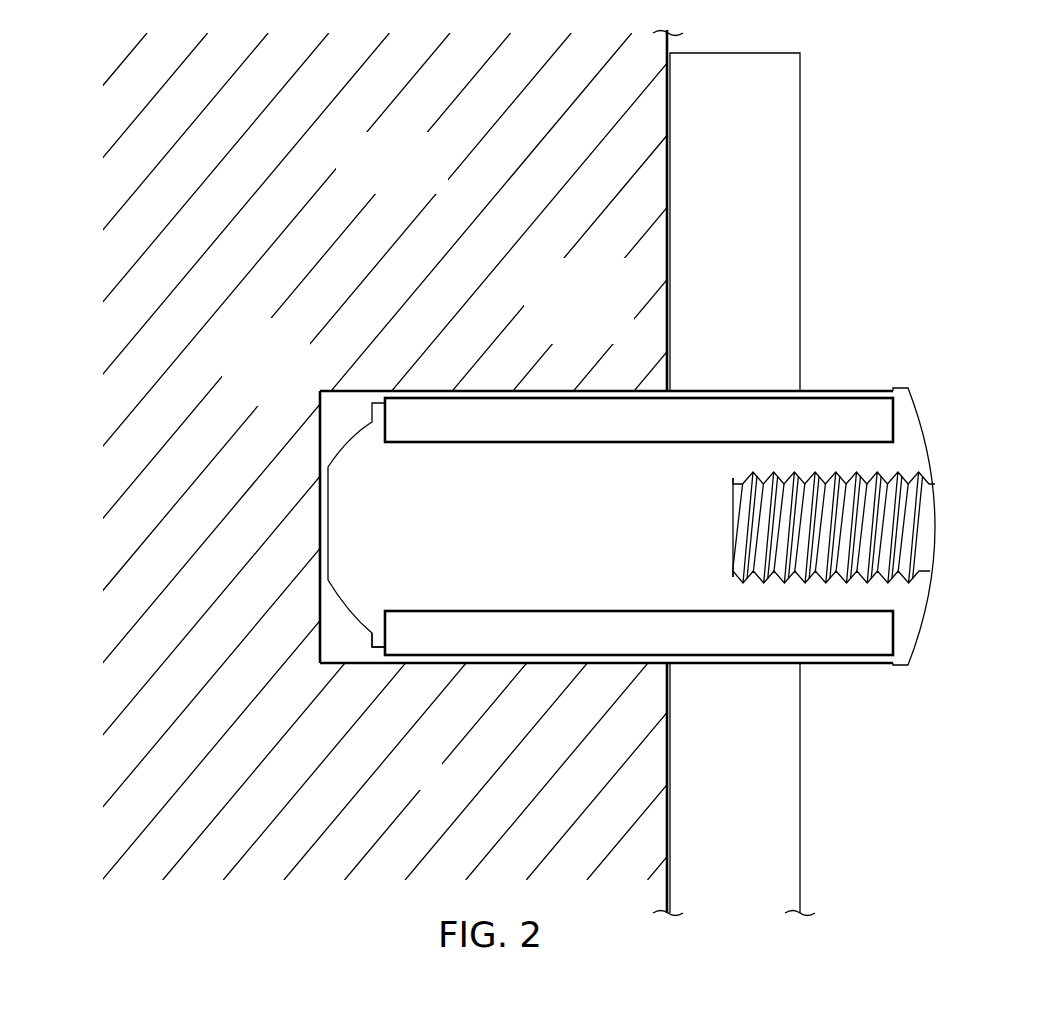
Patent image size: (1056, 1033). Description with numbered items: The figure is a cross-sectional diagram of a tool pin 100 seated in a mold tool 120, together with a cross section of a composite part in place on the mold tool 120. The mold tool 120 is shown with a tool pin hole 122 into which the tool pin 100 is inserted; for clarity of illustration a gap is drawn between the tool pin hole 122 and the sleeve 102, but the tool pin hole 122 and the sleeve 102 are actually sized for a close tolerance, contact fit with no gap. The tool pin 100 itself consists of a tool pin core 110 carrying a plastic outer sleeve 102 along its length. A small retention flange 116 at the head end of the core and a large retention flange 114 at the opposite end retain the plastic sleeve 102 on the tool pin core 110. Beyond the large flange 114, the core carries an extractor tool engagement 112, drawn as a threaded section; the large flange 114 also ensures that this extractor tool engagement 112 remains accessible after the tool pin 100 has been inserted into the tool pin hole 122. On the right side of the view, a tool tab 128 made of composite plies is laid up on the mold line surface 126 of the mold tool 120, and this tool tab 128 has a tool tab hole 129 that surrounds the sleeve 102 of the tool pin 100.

The tool pin 100 is at (928, 617).
The sleeve 102 is at (778, 432).
The tool pin core 110 is at (637, 535).
The extractor tool engagement 112 is at (907, 473).
The large retention flange 114 is at (900, 665).
The small retention flange 116 is at (387, 650).
The mold tool 120 is at (438, 786).
The tool pin hole 122 is at (320, 390).
The mold line surface 126 is at (667, 300).
The tool tab 128 is at (713, 849).
The tool tab hole 129 is at (777, 391).